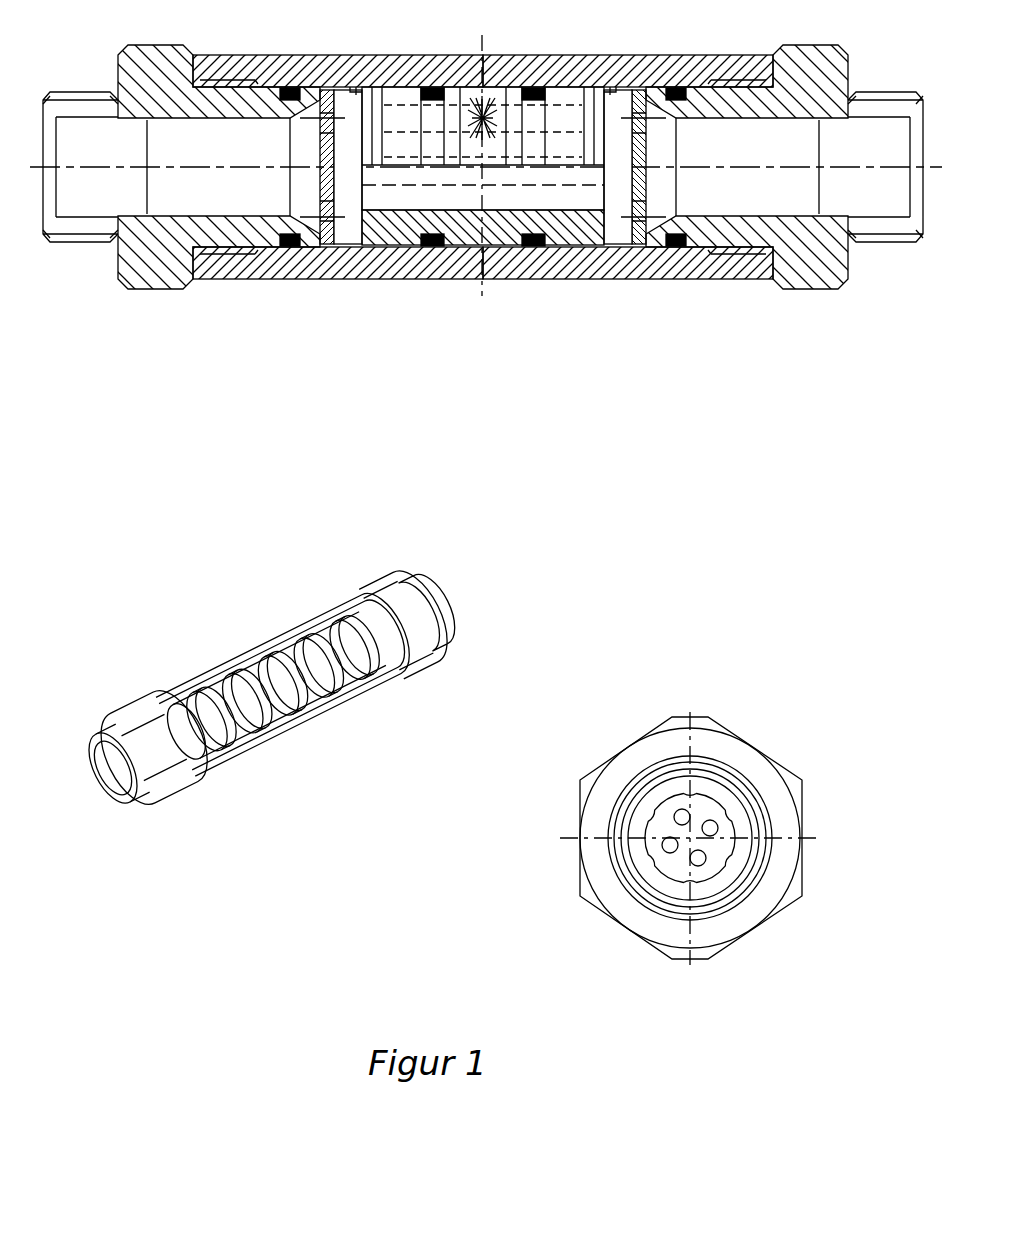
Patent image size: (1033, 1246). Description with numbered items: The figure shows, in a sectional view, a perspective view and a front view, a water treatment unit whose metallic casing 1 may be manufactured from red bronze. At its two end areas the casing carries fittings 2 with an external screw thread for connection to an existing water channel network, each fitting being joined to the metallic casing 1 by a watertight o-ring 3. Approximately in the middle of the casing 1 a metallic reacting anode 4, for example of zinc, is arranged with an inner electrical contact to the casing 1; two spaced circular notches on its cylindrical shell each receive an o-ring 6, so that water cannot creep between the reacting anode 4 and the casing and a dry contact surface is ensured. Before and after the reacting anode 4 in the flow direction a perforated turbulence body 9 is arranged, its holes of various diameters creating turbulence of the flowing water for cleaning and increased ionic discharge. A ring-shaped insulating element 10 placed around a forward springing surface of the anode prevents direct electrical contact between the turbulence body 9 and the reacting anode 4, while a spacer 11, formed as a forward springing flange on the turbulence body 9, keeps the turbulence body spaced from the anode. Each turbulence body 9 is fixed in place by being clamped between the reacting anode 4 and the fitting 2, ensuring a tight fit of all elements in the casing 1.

The metallic casing 1 is at (735, 268).
The fittings 2 is at (145, 272).
The o-ring 3 is at (272, 262).
The reacting anode 4 is at (400, 248).
The o-ring 6 is at (437, 248).
The turbulence body 9 is at (322, 243).
The insulating element 10 is at (360, 248).
The spacer 11 is at (357, 88).